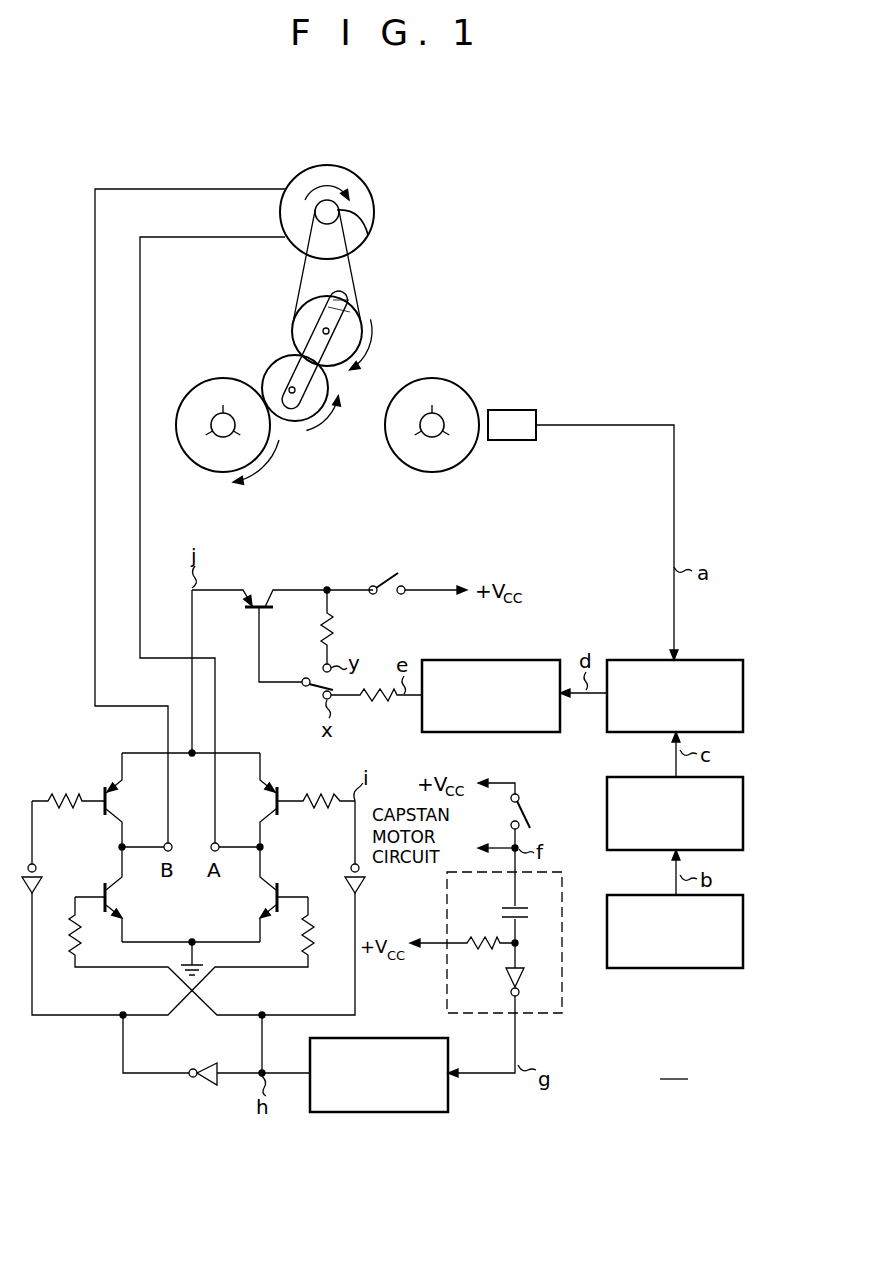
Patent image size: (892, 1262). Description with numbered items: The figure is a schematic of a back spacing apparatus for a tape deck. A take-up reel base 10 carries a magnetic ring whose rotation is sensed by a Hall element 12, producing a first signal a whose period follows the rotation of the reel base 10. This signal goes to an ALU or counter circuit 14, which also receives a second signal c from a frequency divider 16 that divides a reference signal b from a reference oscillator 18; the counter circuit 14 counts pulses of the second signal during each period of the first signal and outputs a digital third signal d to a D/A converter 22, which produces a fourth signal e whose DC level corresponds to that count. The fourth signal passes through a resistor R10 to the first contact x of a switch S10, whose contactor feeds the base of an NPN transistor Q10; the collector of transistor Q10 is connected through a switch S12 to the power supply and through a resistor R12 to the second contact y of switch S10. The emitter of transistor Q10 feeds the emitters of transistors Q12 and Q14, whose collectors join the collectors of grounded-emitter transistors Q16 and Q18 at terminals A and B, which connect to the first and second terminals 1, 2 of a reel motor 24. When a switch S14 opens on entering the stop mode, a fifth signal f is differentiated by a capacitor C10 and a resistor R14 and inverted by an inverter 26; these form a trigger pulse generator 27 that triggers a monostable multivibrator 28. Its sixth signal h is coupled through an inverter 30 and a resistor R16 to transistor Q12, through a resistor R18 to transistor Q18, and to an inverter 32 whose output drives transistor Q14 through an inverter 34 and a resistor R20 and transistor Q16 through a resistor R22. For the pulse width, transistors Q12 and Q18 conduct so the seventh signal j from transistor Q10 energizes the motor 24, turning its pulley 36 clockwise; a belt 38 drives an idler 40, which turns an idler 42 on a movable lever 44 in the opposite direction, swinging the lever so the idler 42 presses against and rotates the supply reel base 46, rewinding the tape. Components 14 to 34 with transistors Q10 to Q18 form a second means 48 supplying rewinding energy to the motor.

The first wire 1 is at (212, 527).
The second wire 2 is at (190, 503).
The take-up reel base 10 is at (434, 392).
The Hall element 12 is at (512, 422).
The arithmetic logic unit (ALU) or counter circuit 14 is at (629, 666).
The frequency divider 16 is at (618, 784).
The reference oscillator 18 is at (616, 902).
The digital-to-analog (D/A) converter 22 is at (443, 666).
The reel motor 24 is at (357, 193).
The inverter 26 is at (505, 976).
The trigger pulse generator 27 is at (547, 1013).
The monostable multivibrator (MMV) 28 is at (414, 1042).
The inverter 30 is at (362, 886).
The inverter 32 is at (198, 1078).
The inverter 34 is at (36, 873).
The pulley 36 is at (368, 235).
The belt 38 is at (297, 282).
The idler 40 is at (356, 330).
The idler 42 is at (278, 372).
The movable lever 44 is at (350, 294).
The supply reel base 46 is at (198, 396).
The second means 48 is at (674, 1067).
The NPN transistor Q10 is at (258, 598).
The NPN transistor Q12 is at (270, 798).
The NPN transistor Q14 is at (114, 800).
The NPN transistor Q16 is at (268, 908).
The NPN transistor Q18 is at (114, 902).
The resistor R10 is at (378, 701).
The resistor R12 is at (335, 630).
The resistor R14 is at (476, 934).
The resistor R16 is at (322, 795).
The resistor R18 is at (82, 935).
The resistor R20 is at (64, 795).
The resistor R22 is at (300, 936).
The switch S10 is at (310, 704).
The switch S12 is at (389, 578).
The switch S14 is at (527, 812).
The capacitor C10 is at (524, 913).